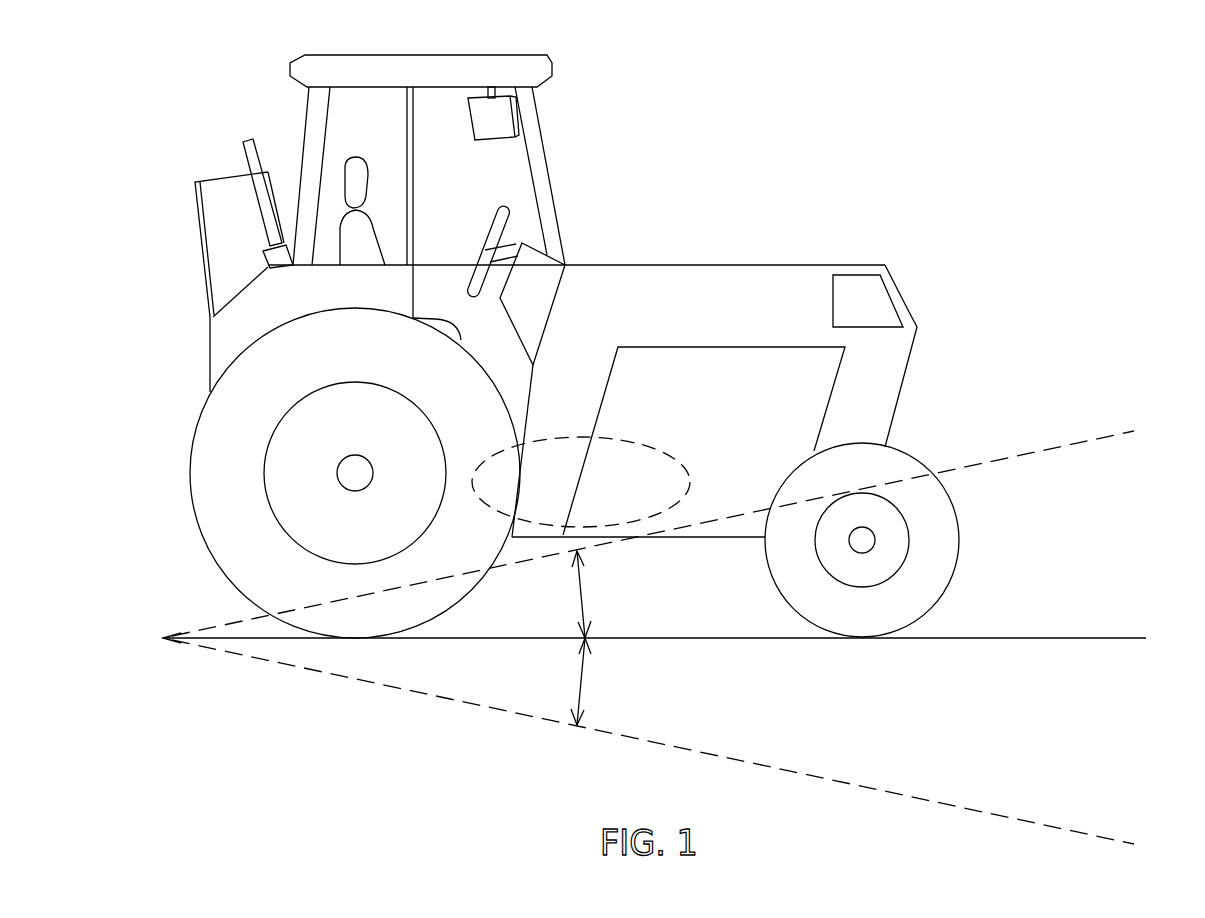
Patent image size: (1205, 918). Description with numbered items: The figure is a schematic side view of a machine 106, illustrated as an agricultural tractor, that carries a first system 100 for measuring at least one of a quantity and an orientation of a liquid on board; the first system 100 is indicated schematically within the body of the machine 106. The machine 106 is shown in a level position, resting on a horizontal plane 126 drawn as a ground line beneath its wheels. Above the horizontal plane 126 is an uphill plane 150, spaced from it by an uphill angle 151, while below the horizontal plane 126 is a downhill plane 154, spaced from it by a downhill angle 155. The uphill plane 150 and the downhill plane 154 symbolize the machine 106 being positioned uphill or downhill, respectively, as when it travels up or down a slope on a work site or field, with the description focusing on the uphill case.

The machine 106 is at (617, 235).
The first system 100 is at (683, 458).
The horizontal plane 126 is at (1100, 638).
The uphill plane 150 is at (1100, 432).
The downhill plane 154 is at (1103, 842).
The uphill angle 151 is at (585, 605).
The downhill angle 155 is at (585, 675).